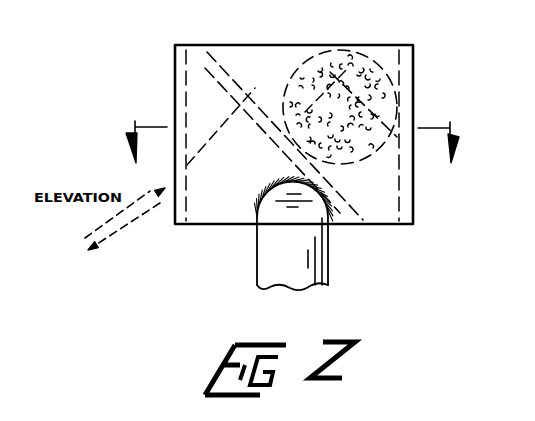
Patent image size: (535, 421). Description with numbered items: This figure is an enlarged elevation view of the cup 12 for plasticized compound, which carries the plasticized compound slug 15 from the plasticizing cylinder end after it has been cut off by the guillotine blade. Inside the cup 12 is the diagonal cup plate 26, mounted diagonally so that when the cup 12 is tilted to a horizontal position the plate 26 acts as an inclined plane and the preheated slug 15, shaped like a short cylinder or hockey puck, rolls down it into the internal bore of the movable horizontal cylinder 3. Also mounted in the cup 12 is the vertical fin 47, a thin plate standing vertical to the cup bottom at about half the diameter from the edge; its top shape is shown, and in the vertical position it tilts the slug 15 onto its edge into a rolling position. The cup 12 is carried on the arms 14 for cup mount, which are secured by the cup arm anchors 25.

The cup for plasticized compound 12 is at (199, 45).
The diagonal cup plate 26 is at (231, 77).
The plasticized compound slug 15 is at (356, 50).
The vertical fin 47 is at (373, 100).
The arms for cup mount 14 is at (260, 268).
The cup arm anchors 25 is at (329, 222).
The movable horizontal cylinder 3 is at (292, 142).